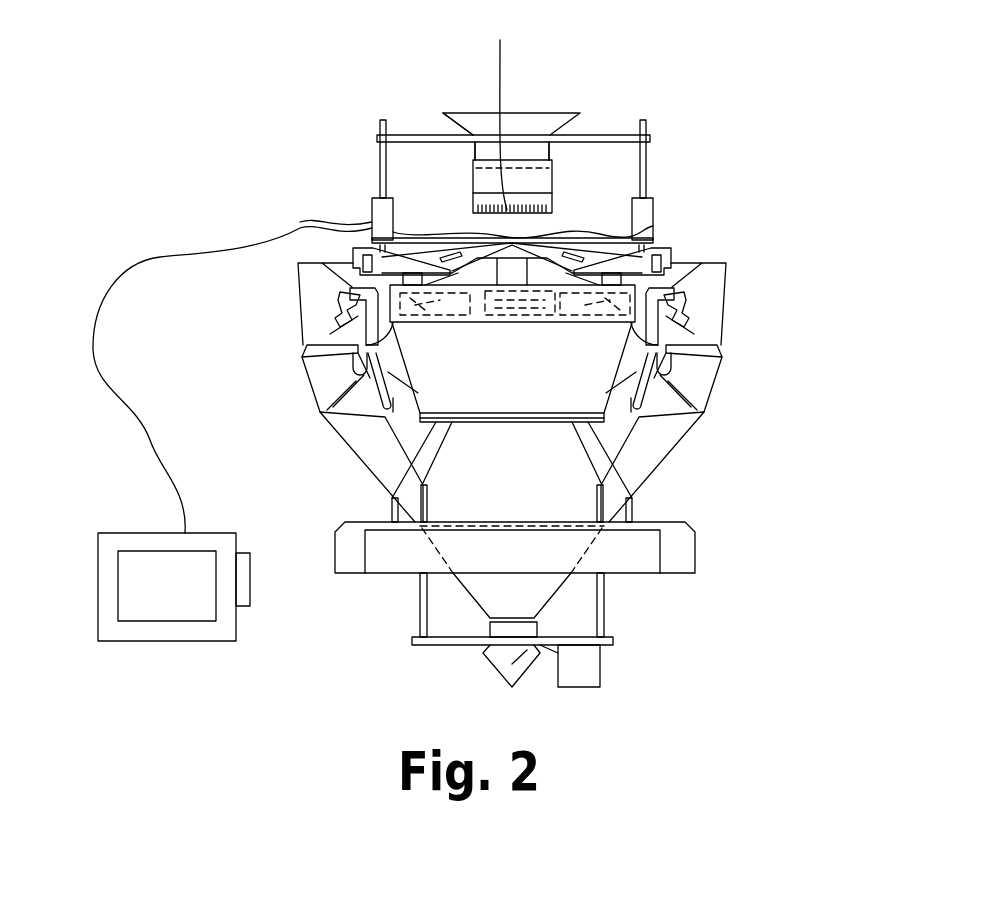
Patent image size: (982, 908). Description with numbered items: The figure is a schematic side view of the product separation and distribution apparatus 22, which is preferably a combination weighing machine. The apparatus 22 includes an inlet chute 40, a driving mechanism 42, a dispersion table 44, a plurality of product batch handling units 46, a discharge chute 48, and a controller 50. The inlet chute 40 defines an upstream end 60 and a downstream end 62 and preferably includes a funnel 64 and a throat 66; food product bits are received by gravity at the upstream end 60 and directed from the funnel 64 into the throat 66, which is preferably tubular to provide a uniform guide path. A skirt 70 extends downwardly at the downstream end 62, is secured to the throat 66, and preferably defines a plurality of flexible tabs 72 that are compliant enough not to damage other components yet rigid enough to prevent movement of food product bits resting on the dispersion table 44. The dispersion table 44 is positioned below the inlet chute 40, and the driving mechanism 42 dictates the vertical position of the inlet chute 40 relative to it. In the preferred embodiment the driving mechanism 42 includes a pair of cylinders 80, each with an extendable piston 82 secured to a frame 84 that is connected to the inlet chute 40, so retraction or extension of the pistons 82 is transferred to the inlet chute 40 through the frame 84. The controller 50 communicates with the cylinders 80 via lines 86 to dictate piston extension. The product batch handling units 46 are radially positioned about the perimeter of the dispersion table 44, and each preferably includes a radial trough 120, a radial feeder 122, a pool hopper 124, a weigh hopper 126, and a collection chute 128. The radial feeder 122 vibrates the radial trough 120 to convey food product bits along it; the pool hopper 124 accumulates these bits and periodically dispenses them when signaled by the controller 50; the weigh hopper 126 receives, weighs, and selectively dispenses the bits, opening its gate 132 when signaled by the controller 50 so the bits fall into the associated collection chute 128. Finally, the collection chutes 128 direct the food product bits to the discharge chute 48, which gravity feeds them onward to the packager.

The product separation and distribution apparatus 22 is at (715, 62).
The inlet chute 40 is at (527, 108).
The driving mechanism 42 is at (662, 208).
The dispersion table 44 is at (552, 237).
The product batch handling units 46 is at (286, 349).
The discharge chute 48 is at (568, 600).
The controller 50 is at (150, 536).
The upstream end 60 is at (556, 124).
The downstream end 62 is at (554, 213).
The funnel 64 is at (463, 124).
The throat 66 is at (483, 150).
The skirt 70 is at (492, 181).
The flexible tabs 72 is at (500, 111).
The cylinders 80 is at (376, 218).
The extendable pistons 82 is at (387, 160).
The frame 84 is at (412, 134).
The lines 86 is at (160, 256).
The radial trough 120 is at (353, 247).
The radial feeder 122 is at (372, 283).
The pool hopper 124 is at (713, 277).
The weigh hopper 126 is at (702, 367).
The collection chute 128 is at (669, 457).
The gate 132 is at (372, 430).